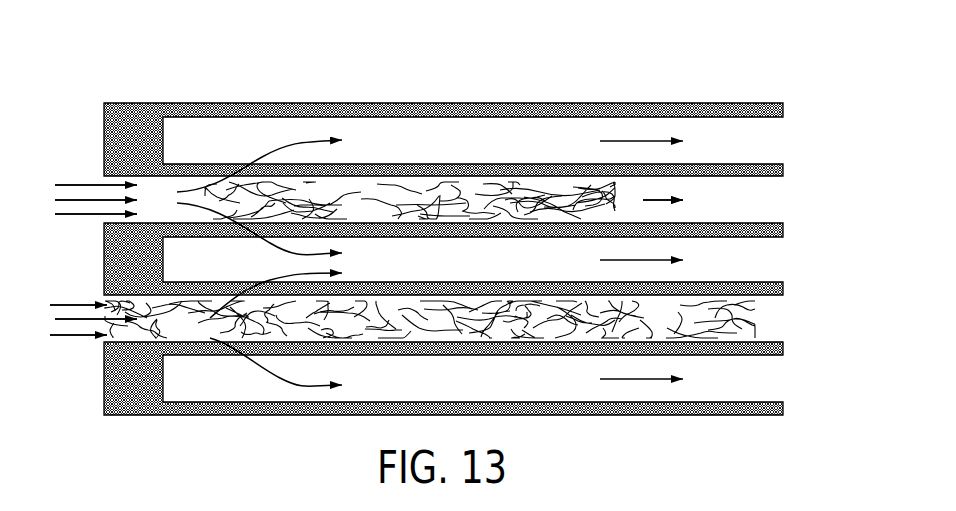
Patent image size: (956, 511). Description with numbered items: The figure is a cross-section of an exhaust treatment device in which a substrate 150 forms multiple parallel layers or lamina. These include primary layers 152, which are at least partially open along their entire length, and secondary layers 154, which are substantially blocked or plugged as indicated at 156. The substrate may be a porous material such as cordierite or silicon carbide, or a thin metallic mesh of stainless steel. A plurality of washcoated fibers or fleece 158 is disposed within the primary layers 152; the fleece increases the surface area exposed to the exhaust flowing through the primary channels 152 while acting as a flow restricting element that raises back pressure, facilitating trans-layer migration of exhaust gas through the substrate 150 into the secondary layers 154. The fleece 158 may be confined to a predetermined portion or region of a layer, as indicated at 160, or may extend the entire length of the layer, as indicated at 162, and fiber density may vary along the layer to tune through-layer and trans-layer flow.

The substrate 150 is at (497, 173).
The primary layers 152 is at (770, 200).
The secondary layers 154 is at (770, 141).
The plug 156 is at (123, 140).
The washcoated fibers or fleece 158 is at (413, 187).
The predetermined portion or region of the layer 160 is at (548, 198).
The fleece extending the entire length of the layer 162 is at (557, 340).